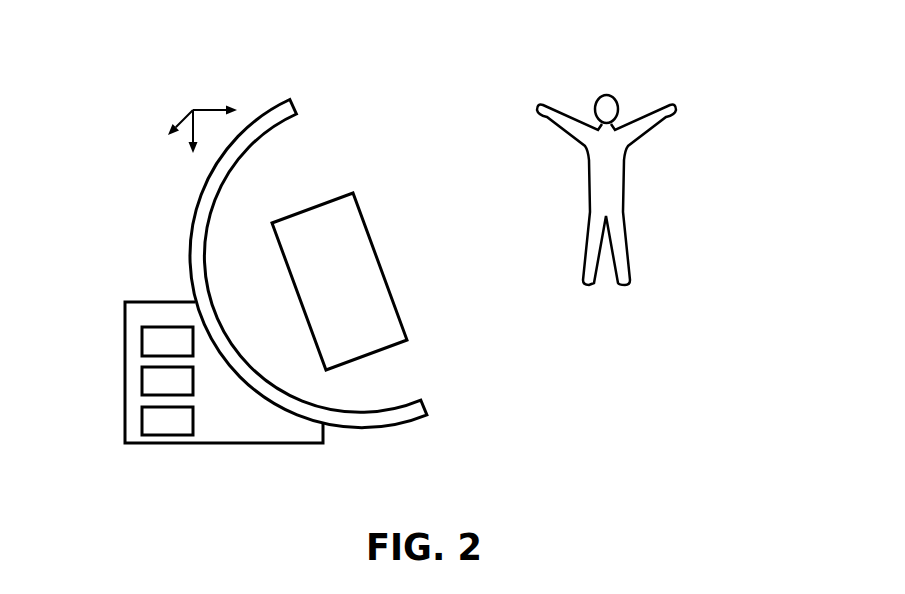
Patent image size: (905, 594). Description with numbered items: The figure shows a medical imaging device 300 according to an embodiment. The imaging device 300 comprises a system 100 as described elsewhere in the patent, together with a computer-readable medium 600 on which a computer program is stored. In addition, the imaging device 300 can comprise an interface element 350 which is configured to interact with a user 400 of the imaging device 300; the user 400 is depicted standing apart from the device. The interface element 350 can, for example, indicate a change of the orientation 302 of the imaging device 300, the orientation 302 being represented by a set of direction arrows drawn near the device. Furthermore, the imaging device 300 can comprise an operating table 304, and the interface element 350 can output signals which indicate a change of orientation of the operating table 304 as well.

The system 100 is at (165, 327).
The imaging device 300 is at (134, 200).
The orientation 302 is at (213, 110).
The operating table 304 is at (402, 322).
The interface element 350 is at (142, 379).
The user 400 is at (674, 168).
The computer-readable medium 600 is at (162, 435).